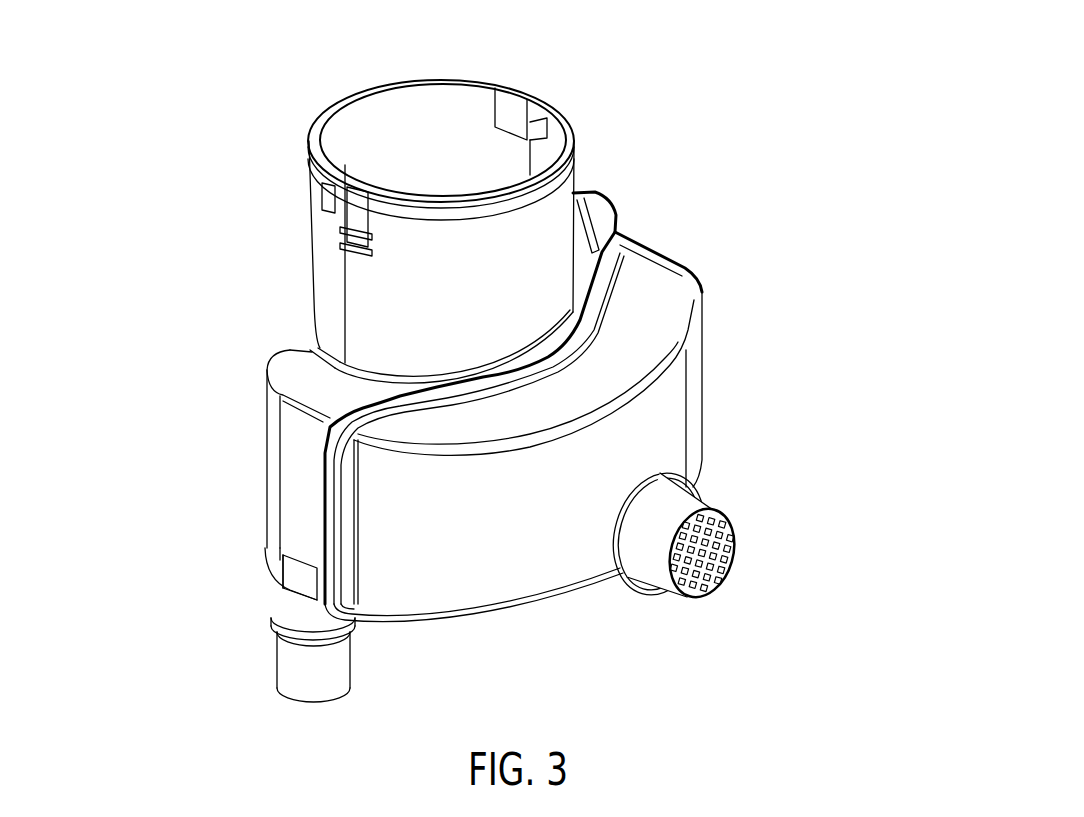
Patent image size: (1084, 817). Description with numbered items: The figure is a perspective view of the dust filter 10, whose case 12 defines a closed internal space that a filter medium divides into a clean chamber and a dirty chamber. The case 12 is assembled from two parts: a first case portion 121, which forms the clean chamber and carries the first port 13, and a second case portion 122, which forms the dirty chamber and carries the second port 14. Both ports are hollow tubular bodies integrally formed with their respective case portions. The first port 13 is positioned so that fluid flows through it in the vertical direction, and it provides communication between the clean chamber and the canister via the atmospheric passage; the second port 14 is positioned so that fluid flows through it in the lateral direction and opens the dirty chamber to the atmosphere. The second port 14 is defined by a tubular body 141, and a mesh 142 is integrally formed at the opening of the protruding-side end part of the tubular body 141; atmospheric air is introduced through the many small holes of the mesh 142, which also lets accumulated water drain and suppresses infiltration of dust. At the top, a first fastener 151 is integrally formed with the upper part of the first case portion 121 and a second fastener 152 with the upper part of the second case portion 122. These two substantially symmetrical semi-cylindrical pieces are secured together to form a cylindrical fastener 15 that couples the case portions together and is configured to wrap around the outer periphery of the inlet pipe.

The dust filter 10 is at (498, 353).
The case 12 is at (414, 443).
The first case portion 121 is at (292, 372).
The second case portion 122 is at (506, 566).
The first port 13 is at (293, 662).
The second port 14 is at (735, 538).
The tubular body 141 is at (697, 497).
The mesh 142 is at (720, 573).
The fastener 15 is at (485, 183).
The first fastener 151 is at (577, 144).
The second fastener 152 is at (373, 88).